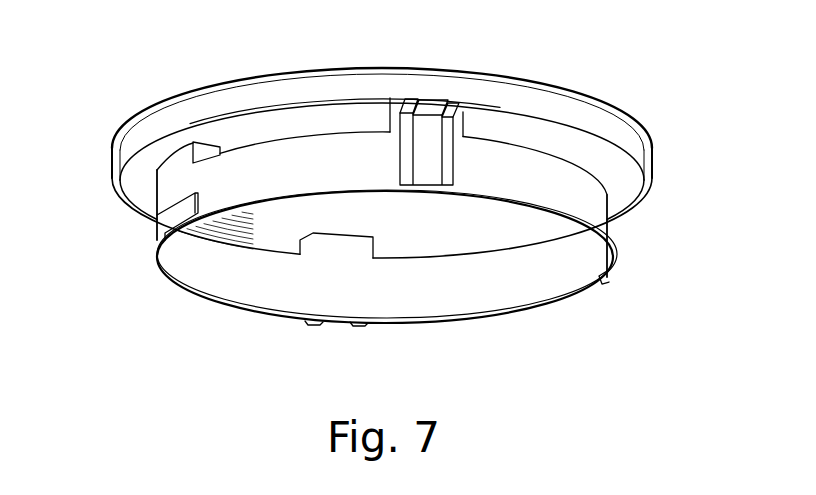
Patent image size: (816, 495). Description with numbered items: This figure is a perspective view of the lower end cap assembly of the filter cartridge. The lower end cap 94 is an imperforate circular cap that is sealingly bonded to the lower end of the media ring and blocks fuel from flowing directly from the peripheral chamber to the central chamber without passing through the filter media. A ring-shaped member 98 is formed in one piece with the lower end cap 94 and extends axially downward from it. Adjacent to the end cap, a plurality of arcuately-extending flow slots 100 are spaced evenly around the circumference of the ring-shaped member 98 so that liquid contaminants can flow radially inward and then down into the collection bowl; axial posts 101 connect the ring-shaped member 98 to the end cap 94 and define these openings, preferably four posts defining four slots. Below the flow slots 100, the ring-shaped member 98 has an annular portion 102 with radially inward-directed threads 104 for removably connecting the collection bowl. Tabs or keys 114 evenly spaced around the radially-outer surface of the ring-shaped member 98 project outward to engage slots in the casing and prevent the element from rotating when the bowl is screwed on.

The lower end cap 94 is at (648, 157).
The ring-shaped member 98 is at (596, 222).
The flow slots 100 is at (303, 120).
The axial posts 101 is at (206, 150).
The annular portion 102 is at (280, 177).
The threads 104 is at (491, 283).
The tabs or keys 114 is at (168, 218).